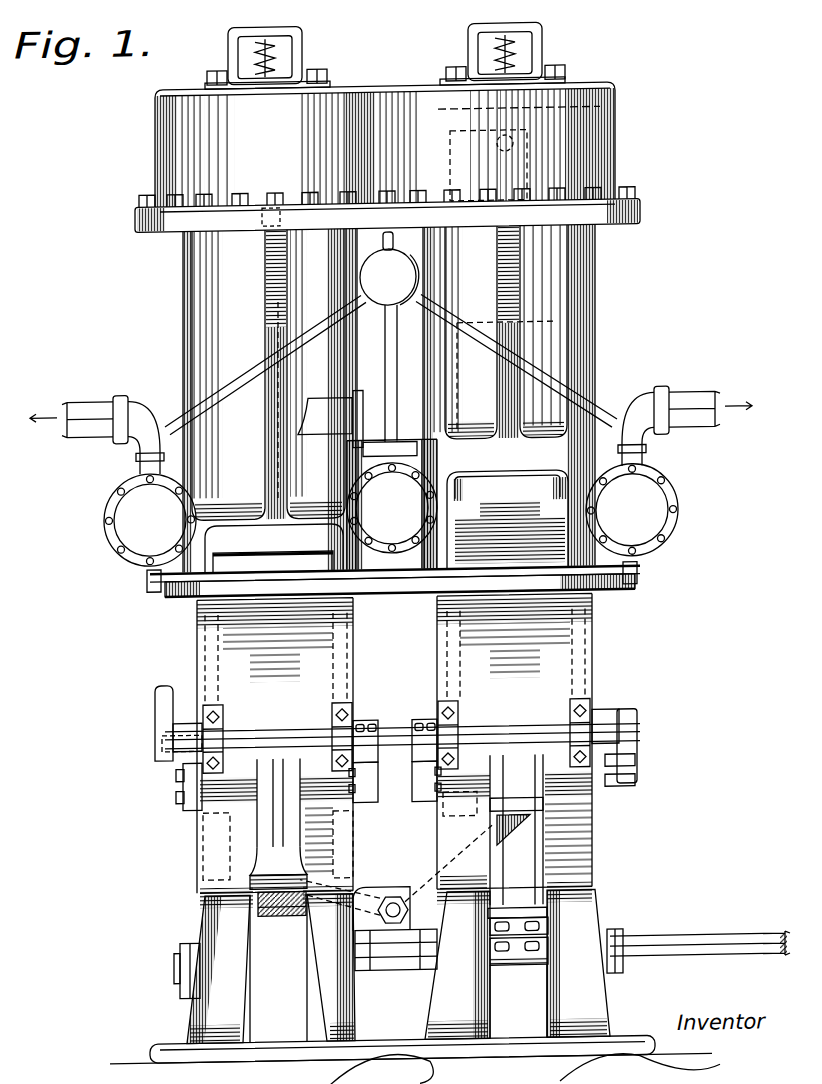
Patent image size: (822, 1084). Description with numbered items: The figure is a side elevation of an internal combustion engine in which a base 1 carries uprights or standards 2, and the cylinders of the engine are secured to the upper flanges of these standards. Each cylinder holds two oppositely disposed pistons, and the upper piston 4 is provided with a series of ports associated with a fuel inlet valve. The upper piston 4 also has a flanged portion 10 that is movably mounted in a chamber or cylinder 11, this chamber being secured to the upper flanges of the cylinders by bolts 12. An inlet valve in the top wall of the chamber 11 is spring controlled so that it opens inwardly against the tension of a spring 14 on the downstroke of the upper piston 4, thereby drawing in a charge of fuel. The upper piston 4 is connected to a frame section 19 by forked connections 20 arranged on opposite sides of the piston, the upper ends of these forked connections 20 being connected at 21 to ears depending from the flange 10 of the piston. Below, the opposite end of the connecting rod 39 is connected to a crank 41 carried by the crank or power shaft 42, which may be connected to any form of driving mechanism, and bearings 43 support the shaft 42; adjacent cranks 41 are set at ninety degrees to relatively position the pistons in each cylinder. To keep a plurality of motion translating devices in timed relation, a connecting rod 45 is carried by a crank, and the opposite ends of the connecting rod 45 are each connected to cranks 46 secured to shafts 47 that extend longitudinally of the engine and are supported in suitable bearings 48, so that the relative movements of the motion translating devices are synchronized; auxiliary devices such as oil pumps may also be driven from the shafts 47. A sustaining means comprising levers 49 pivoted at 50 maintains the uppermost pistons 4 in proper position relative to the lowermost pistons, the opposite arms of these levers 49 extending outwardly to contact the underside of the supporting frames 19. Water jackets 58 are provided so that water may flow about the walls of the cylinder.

The base 1 is at (501, 1049).
The uprights or standards 2 is at (587, 865).
The upper piston 4 is at (548, 265).
The flanged portion 10 is at (577, 142).
The chamber or cylinder 11 is at (612, 97).
The bolts 12 is at (628, 197).
The spring 14 is at (276, 58).
The frame section 19 is at (230, 858).
The forked connections 20 is at (386, 506).
The connection 21 is at (503, 153).
The connecting rod 39 is at (277, 833).
The crank 41 is at (312, 978).
The crank or power shaft 42 is at (720, 931).
The bearings 43 is at (190, 936).
The connecting rod 45 is at (163, 688).
The cranks 46 is at (175, 761).
The shafts 47 is at (478, 732).
The bearings 48 is at (222, 708).
The levers 49 is at (520, 845).
The pivot 50 is at (395, 897).
The water jackets 58 is at (186, 290).